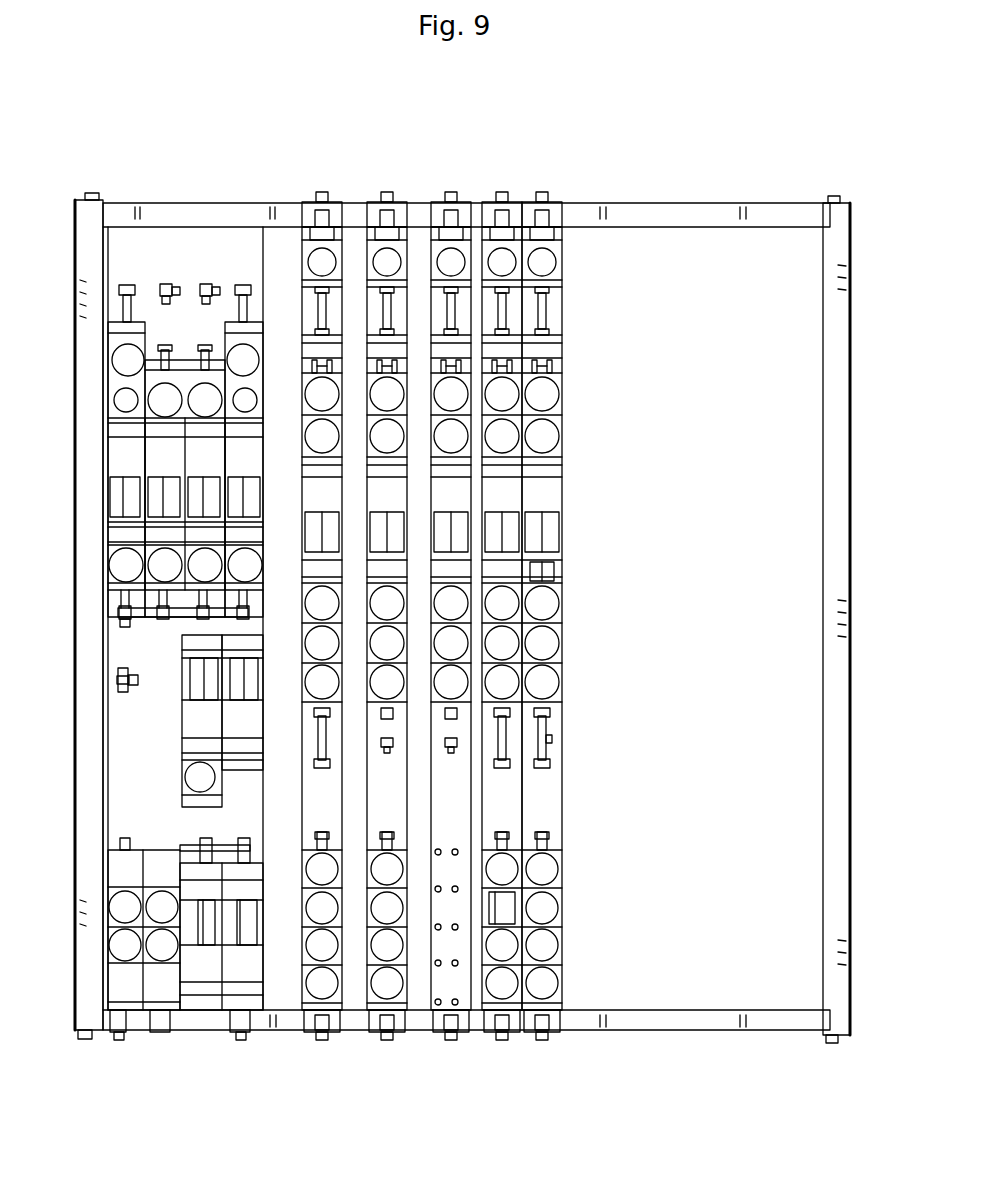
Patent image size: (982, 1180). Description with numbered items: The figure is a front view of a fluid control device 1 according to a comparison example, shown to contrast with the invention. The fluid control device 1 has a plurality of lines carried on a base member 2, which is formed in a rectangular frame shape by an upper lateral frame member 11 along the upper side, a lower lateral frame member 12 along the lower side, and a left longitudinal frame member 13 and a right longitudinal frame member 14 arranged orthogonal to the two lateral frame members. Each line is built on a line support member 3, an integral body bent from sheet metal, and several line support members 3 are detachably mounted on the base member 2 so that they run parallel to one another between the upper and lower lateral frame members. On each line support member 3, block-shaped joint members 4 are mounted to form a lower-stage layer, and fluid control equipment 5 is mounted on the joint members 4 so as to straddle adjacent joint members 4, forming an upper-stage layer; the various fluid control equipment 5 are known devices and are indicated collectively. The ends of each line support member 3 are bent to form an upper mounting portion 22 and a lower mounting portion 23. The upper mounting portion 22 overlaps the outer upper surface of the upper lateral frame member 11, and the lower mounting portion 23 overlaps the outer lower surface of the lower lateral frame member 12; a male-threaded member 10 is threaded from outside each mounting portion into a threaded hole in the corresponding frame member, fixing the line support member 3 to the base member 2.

The fluid control device 1 is at (463, 617).
The base member 2 is at (463, 617).
The line support member 3 is at (450, 778).
The joint member 4 is at (564, 287).
The fluid control equipment 5 is at (562, 255).
The male-threaded member 10 is at (464, 608).
The upper lateral frame member 11 is at (670, 204).
The lower lateral frame member 12 is at (648, 1030).
The left longitudinal frame member 13 is at (88, 681).
The right longitudinal frame member 14 is at (836, 665).
The upper mounting portion 22 is at (451, 192).
The lower mounting portion 23 is at (440, 1015).